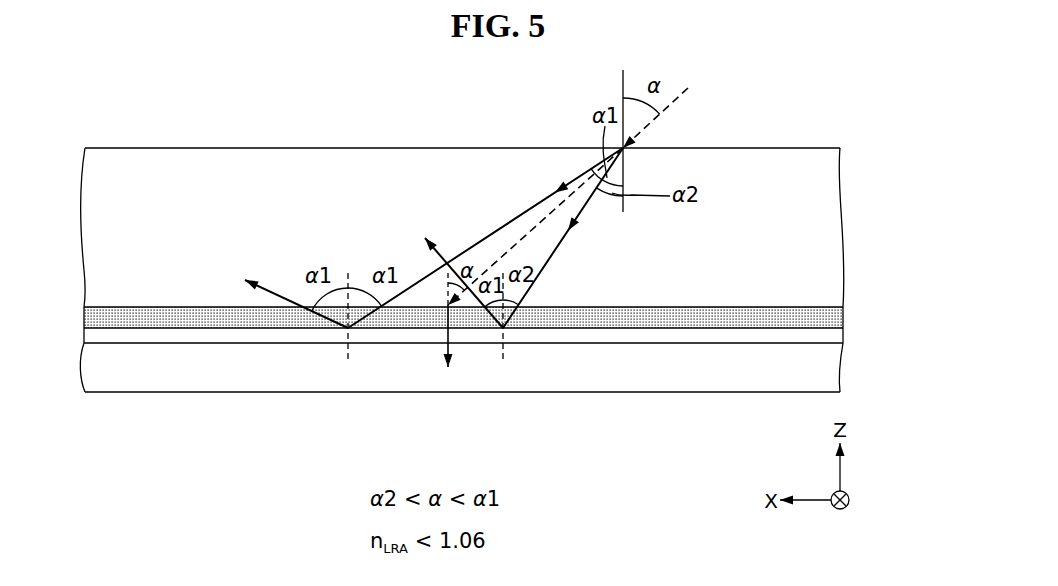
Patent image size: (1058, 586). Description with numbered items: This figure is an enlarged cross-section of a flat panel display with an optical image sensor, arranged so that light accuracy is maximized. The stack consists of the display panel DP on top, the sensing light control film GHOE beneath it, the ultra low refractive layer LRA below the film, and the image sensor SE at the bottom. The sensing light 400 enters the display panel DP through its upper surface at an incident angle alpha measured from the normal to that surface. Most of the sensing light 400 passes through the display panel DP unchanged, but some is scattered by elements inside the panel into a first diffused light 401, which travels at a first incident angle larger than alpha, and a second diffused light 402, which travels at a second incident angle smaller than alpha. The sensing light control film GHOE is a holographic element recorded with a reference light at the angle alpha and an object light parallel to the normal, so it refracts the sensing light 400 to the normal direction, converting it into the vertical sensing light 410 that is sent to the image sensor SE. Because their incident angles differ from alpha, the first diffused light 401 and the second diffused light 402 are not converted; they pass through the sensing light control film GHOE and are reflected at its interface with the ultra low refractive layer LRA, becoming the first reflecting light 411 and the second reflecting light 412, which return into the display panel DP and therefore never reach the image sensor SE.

The sensing light 400 is at (675, 103).
The first diffused light 401 is at (577, 178).
The second diffused light 402 is at (580, 214).
The vertical sensing light 410 is at (445, 338).
The first reflecting light 411 is at (280, 294).
The second reflecting light 412 is at (448, 262).
The display panel DP is at (833, 237).
The sensing light control film GHOE is at (832, 316).
The ultra low refractive layer LRA is at (833, 338).
The image sensor SE is at (833, 372).